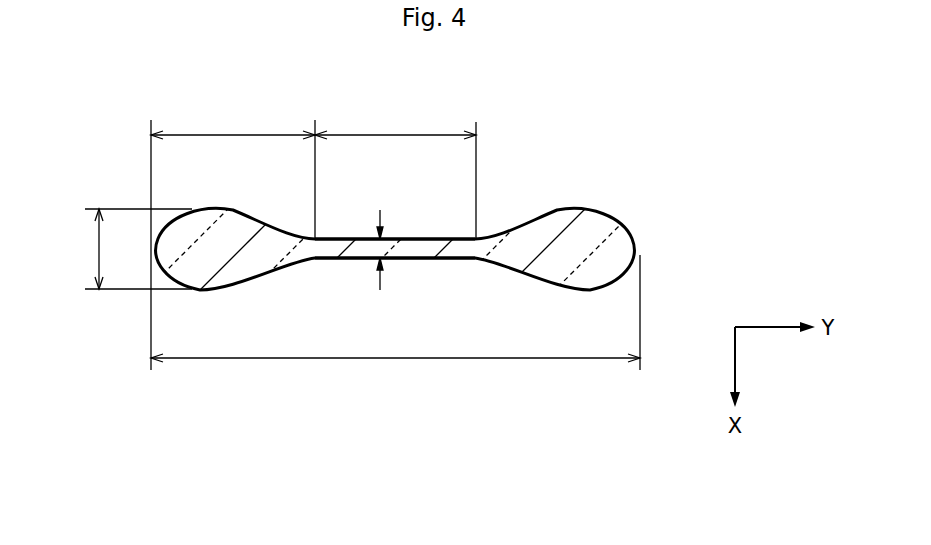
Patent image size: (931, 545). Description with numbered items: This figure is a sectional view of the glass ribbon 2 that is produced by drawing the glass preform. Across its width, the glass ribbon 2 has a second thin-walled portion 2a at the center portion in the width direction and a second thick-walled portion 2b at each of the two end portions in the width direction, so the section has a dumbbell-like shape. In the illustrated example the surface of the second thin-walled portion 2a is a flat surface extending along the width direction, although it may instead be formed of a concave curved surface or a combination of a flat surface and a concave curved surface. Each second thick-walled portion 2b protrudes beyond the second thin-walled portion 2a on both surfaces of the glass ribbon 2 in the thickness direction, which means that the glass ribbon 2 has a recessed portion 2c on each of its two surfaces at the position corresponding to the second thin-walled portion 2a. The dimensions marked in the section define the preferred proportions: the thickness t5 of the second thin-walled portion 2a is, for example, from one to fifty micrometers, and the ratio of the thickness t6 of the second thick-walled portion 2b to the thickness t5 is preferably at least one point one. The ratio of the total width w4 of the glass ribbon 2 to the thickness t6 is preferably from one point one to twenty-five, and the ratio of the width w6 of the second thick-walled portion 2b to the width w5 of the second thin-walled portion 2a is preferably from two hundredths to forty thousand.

The glass ribbon 2 is at (531, 160).
The second thin-walled portion 2a is at (425, 250).
The second thick-walled portion 2b is at (208, 215).
The recessed portion 2c is at (358, 238).
The total width of the glass ribbon w4 is at (397, 358).
The width of the second thin-walled portion w5 is at (395, 133).
The width of the second thick-walled portion w6 is at (236, 135).
The thickness of the second thin-walled portion t5 is at (376, 262).
The thickness of the second thick-walled portion t6 is at (97, 249).